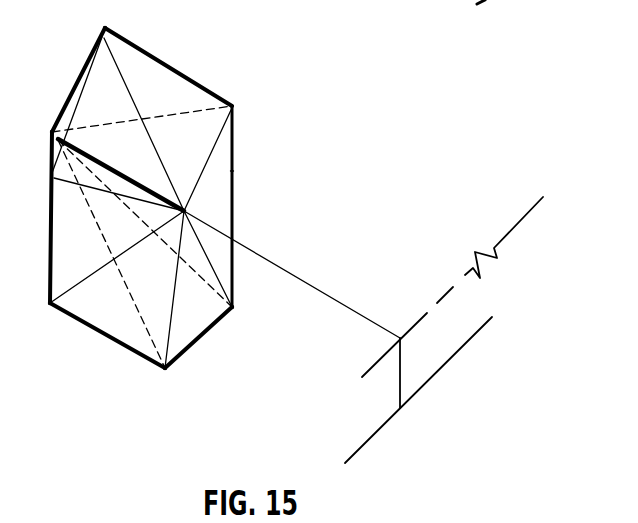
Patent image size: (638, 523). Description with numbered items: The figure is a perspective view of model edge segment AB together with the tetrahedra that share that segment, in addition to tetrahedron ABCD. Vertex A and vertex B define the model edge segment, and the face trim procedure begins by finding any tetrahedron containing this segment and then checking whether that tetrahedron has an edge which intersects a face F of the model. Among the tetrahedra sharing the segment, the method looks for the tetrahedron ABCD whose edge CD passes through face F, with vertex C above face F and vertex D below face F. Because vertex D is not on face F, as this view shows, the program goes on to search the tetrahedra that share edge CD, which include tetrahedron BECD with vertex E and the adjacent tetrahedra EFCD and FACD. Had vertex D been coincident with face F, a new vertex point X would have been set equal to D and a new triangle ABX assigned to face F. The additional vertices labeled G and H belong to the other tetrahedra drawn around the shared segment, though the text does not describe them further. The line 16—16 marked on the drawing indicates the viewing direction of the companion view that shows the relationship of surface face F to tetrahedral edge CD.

The line 16— 16 is at (480, 332).
The vertex A is at (34, 212).
The vertex B is at (144, 162).
The vertex C is at (251, 192).
The vertex D is at (217, 289).
The vertex E is at (117, 313).
The face F is at (207, 274).
The vertex G is at (108, 124).
The vertex H is at (142, 105).
The new vertex point X is at (235, 173).